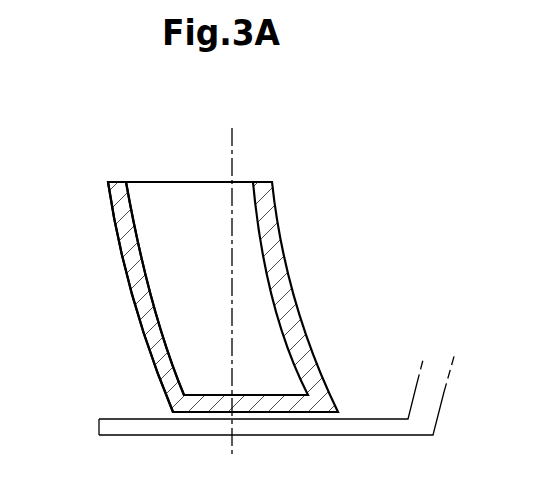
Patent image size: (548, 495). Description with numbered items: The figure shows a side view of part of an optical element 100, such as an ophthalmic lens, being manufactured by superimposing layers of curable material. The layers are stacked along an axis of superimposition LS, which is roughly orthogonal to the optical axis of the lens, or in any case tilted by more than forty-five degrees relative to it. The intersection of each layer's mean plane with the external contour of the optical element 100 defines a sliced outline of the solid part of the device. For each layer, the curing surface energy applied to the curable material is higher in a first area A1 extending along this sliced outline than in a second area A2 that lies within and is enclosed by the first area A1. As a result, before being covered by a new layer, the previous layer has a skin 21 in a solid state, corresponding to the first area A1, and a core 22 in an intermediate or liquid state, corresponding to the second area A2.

The optical element 100 is at (274, 280).
The skin 21 is at (274, 280).
The core 22 is at (143, 220).
The first area A1 is at (153, 338).
The second area A2 is at (188, 305).
The axis of superimposition LS is at (232, 155).